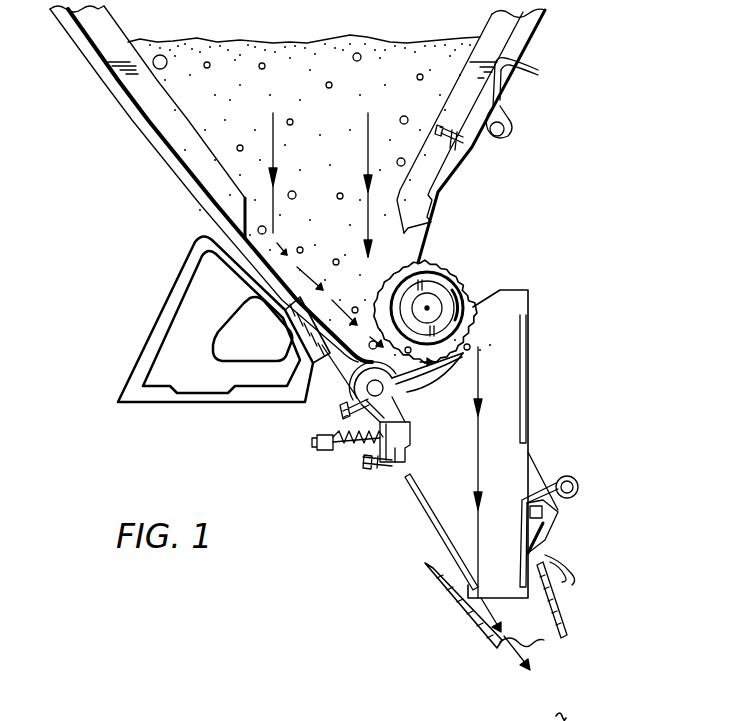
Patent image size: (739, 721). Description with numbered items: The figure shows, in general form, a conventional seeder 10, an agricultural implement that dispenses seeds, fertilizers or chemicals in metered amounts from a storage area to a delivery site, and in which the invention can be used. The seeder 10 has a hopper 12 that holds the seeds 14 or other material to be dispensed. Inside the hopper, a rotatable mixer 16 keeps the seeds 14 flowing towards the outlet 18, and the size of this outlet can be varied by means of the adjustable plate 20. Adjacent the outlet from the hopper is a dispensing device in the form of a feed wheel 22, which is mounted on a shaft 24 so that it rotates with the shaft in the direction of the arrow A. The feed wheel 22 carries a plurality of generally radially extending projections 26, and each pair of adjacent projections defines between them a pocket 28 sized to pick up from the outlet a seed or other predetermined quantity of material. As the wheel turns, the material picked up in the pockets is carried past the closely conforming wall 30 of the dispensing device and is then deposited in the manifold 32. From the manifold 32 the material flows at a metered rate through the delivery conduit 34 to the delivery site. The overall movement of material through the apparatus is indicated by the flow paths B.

The seeder 10 is at (112, 112).
The hopper 12 is at (160, 162).
The seeds 14 is at (160, 54).
The rotatable mixer 16 is at (357, 228).
The outlet 18 is at (332, 315).
The adjustable plate 20 is at (440, 232).
The feed wheel 22 is at (508, 263).
The shaft 24 is at (430, 306).
The radially extending projections 26 is at (438, 270).
The pocket 28 is at (478, 267).
The closely conforming wall 30 is at (465, 356).
The manifold 32 is at (530, 412).
The delivery conduit 34 is at (467, 618).
The arrow indicating direction of rotation A is at (462, 317).
The material flow paths B is at (480, 456).